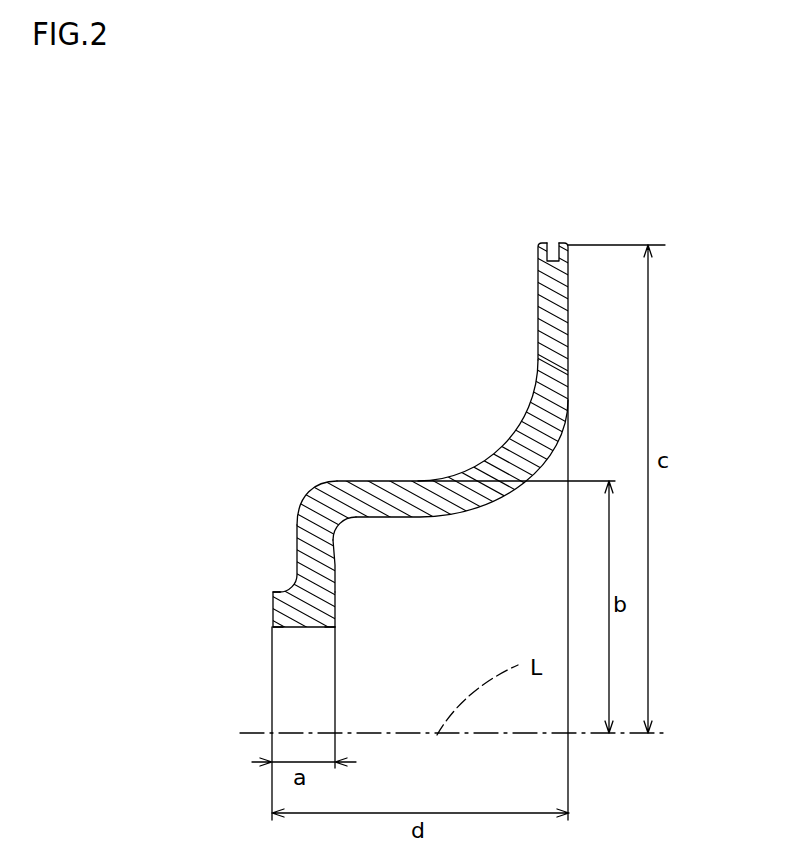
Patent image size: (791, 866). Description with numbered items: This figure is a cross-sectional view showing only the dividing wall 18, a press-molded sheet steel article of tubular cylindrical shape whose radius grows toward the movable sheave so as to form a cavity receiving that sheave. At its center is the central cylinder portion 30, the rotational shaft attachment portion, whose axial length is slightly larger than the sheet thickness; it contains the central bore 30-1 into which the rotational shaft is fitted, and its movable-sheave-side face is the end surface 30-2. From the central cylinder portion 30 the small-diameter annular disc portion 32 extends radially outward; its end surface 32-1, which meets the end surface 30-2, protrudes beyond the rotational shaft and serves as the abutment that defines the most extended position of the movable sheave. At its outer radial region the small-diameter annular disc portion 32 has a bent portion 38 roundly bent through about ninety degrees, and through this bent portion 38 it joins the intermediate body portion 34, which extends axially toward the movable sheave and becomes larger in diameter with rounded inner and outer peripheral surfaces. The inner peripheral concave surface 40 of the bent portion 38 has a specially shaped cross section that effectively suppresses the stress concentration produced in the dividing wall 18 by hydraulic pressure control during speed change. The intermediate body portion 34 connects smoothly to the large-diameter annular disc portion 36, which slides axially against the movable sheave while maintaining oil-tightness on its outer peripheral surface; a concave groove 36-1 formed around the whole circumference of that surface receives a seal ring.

The dividing wall 18 is at (385, 384).
The central cylinder portion 30 is at (297, 600).
The central bore 30-1 is at (292, 630).
The end surface of the movable sheave side of the central cylinder portion 30-2 is at (337, 613).
The small-diameter annular disc portion 32 is at (293, 582).
The end surface of the small-diameter annular disc portion 32-1 is at (337, 575).
The intermediate body portion 34 is at (395, 487).
The large-diameter annular disc portion 36 is at (555, 323).
The concave groove 36-1 is at (555, 258).
The bent portion 38 is at (322, 512).
The inner peripheral concave surface 40 is at (328, 527).